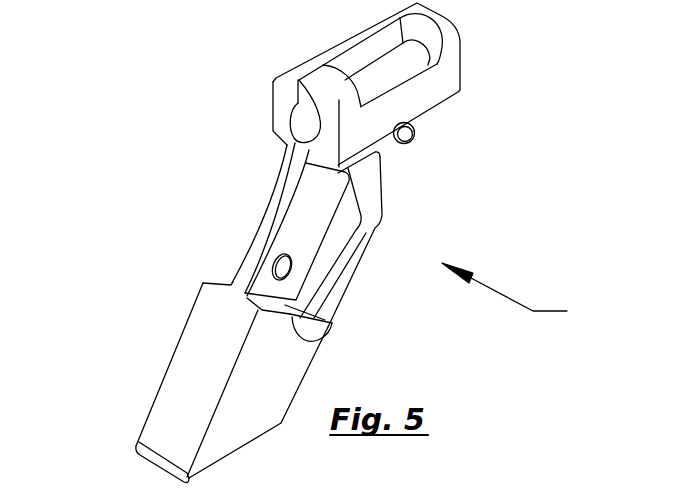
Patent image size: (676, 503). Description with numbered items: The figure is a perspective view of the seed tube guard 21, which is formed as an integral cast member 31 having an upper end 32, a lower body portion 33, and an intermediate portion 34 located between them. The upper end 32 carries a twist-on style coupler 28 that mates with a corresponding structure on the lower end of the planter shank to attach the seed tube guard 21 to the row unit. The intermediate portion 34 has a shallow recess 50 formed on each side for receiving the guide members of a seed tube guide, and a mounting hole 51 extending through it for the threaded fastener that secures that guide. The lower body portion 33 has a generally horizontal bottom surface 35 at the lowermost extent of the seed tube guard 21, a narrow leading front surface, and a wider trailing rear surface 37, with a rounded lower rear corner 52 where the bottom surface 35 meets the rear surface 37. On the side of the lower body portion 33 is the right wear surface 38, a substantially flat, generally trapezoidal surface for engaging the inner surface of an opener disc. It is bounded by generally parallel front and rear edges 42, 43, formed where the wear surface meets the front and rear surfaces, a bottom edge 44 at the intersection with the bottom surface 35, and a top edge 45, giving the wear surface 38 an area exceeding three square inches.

The seed tube guard 21 is at (523, 294).
The twist-on style coupler 28 is at (322, 82).
The integral cast member 31 is at (200, 297).
The upper end 32 is at (425, 98).
The lower body portion 33 is at (188, 377).
The intermediate portion 34 is at (280, 203).
The bottom surface 35 is at (218, 465).
The trailing rear surface 37 is at (170, 423).
The right wear surface 38 is at (287, 370).
The front edge 42 is at (300, 386).
The rear edge 43 is at (237, 360).
The bottom edge 44 is at (263, 435).
The top edge 45 is at (333, 338).
The shallow recess 50 is at (287, 232).
The mounting hole 51 is at (273, 267).
The rounded lower rear corner 52 is at (153, 460).